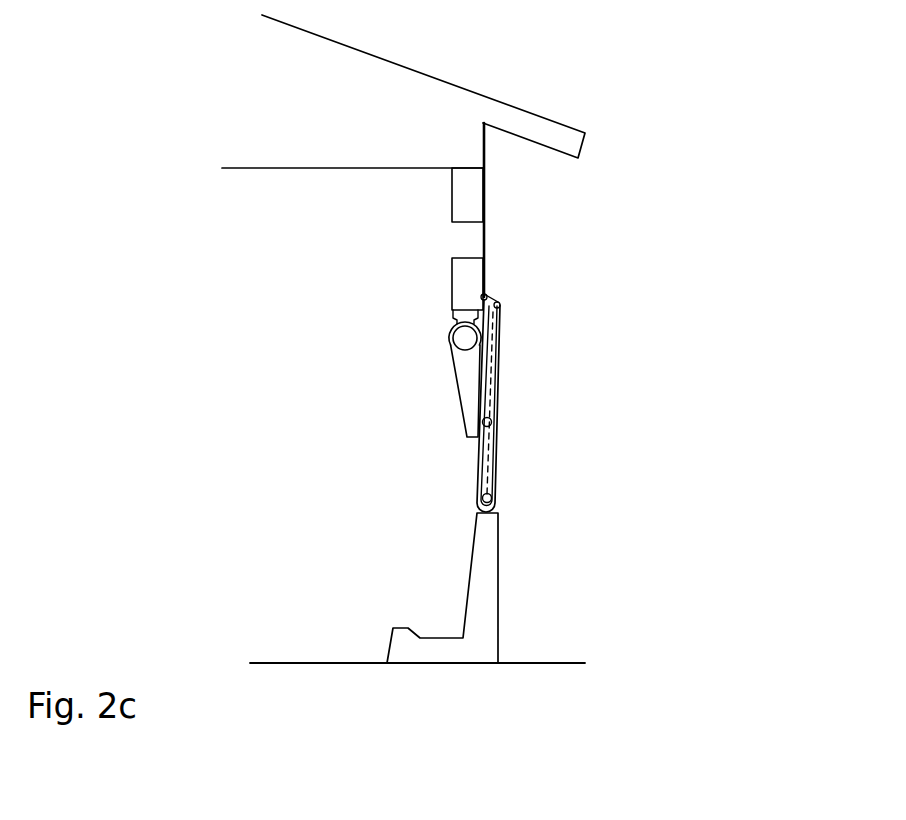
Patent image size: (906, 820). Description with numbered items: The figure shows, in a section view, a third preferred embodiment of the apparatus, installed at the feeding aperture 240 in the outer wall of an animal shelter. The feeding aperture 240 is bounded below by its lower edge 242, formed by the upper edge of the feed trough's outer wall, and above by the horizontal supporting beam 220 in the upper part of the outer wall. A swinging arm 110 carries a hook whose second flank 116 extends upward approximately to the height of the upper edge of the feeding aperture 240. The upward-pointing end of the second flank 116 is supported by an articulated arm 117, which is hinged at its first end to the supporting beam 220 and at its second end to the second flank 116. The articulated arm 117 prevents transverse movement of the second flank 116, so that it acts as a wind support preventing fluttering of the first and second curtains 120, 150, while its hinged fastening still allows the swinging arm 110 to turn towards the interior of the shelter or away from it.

The swinging arm 110 is at (462, 369).
The second flank 116 is at (498, 374).
The articulated arm 117 is at (489, 296).
The first curtain 120 is at (463, 370).
The second curtain 150 is at (493, 459).
The supporting beam 220 is at (470, 283).
The feeding aperture 240 is at (467, 462).
The lower edge of the feeding aperture 242 is at (473, 507).